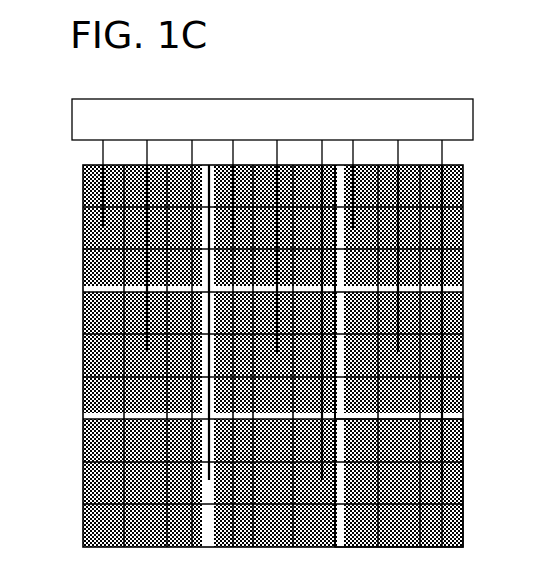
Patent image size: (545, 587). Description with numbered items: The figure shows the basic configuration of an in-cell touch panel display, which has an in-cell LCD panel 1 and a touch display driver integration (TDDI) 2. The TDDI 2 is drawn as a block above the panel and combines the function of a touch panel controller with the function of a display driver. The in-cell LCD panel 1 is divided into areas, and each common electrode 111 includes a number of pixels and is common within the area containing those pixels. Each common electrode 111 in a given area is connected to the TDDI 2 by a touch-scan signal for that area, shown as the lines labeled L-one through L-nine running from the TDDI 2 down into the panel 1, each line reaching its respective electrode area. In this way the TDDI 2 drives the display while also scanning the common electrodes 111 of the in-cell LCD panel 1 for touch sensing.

The in-cell LCD panel 1 is at (463, 195).
The touch display driver integration (TDDI) 2 is at (388, 100).
The common electrode 111 is at (443, 522).